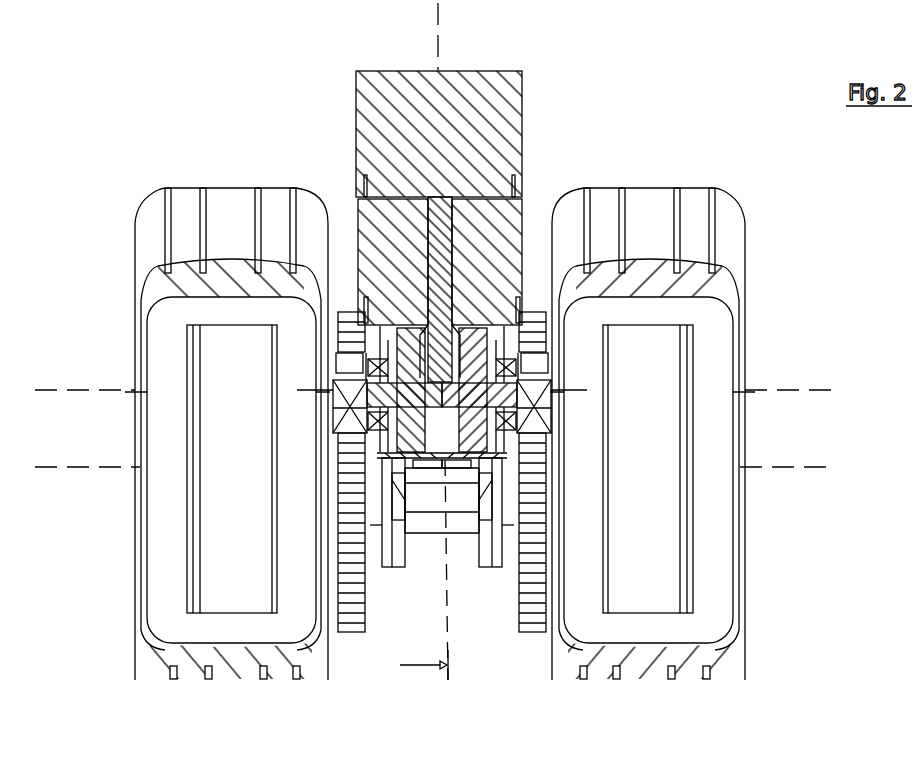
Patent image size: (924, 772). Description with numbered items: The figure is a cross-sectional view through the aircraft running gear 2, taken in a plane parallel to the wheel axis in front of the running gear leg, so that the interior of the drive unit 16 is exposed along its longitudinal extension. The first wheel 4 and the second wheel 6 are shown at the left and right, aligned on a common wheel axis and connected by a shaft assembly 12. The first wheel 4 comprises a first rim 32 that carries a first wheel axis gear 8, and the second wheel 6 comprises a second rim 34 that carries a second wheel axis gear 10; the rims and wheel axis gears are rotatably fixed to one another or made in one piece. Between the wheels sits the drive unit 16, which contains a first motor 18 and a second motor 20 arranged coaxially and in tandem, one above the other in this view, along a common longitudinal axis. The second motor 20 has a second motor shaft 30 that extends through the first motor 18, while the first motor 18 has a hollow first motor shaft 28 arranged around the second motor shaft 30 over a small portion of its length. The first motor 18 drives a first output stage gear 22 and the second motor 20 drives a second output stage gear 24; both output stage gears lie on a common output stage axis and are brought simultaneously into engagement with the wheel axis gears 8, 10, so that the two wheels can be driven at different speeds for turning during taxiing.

The aircraft running gear 2 is at (740, 120).
The first wheel 4 is at (743, 244).
The second wheel 6 is at (135, 240).
The first wheel axis gear 8 is at (540, 636).
The second wheel axis gear 10 is at (362, 636).
The shaft assembly 12 is at (436, 535).
The drive unit 16 is at (322, 132).
The first motor 18 is at (522, 213).
The second motor 20 is at (522, 127).
The first output stage gear 22 is at (514, 374).
The second output stage gear 24 is at (369, 374).
The first motor shaft 28 is at (452, 324).
The second motor shaft 30 is at (452, 256).
The first rim 32 is at (651, 452).
The second rim 34 is at (248, 452).